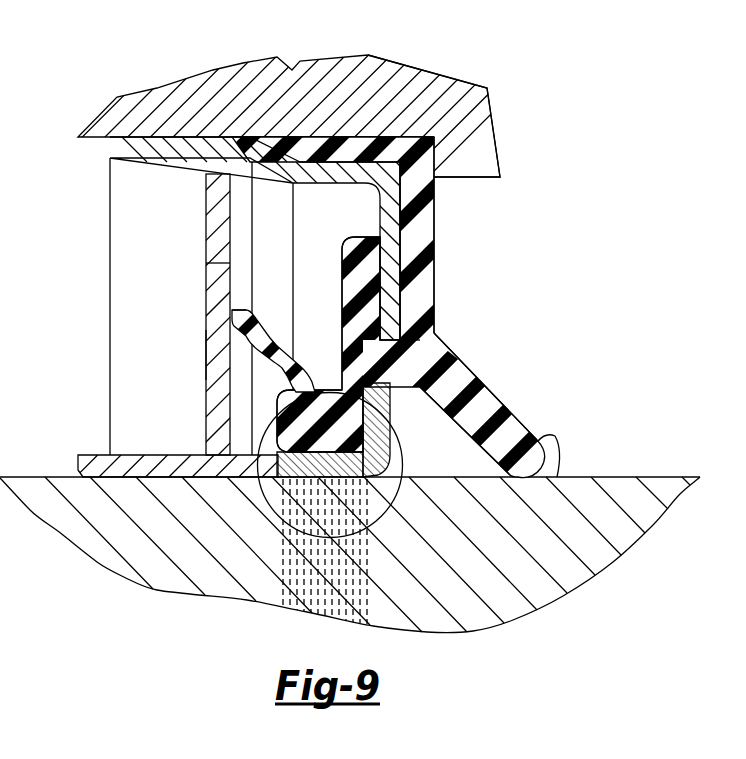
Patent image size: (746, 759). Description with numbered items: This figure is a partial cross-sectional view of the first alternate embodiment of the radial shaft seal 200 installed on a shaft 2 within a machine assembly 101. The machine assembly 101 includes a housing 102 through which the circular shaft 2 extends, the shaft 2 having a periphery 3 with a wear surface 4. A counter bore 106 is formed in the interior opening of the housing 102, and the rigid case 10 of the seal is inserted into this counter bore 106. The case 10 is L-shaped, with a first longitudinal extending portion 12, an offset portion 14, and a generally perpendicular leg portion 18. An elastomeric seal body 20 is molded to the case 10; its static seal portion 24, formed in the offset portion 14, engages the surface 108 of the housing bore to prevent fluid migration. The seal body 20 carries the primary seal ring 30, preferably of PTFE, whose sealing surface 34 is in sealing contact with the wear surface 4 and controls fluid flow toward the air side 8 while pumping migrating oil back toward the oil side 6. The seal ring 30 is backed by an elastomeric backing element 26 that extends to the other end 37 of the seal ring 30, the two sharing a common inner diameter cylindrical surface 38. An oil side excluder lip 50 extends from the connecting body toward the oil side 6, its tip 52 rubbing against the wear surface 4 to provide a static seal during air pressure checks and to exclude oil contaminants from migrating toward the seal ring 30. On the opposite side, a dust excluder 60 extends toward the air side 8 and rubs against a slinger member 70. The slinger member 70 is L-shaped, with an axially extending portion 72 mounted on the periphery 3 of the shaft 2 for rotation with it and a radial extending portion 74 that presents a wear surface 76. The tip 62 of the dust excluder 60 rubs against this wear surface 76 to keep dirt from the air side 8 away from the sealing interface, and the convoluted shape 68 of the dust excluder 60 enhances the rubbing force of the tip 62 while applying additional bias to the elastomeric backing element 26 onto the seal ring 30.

The shaft 2 is at (544, 565).
The periphery of the shaft 3 is at (641, 477).
The wear surface 4 is at (350, 508).
The oil side 6 is at (513, 321).
The air side 8 is at (155, 381).
The case 10 is at (327, 288).
The first longitudinal extending portion 12 is at (340, 170).
The offset portion 14 is at (153, 157).
The perpendicular leg portion 18 is at (394, 253).
The seal body 20 is at (330, 265).
The static seal portion 24 is at (382, 142).
The elastomeric backing element 26 is at (300, 404).
The seal ring 30 is at (300, 518).
The sealing surface 34 is at (277, 454).
The other end of the seal ring 37 is at (404, 396).
The common inner diameter cylindrical surface 38 is at (390, 435).
The excluder lip 50 is at (488, 400).
The tip 52 is at (548, 460).
The dust excluder 60 is at (268, 345).
The tip of the dust excluder 62 is at (232, 318).
The convoluted shape 68 is at (312, 390).
The slinger member 70 is at (205, 353).
The axially extending portion 72 is at (128, 460).
The radial extending portion 74 is at (217, 242).
The wear surface of the slinger 76 is at (230, 282).
The machine assembly 101 is at (435, 105).
The housing 102 is at (158, 102).
The counter bore 106 is at (430, 134).
The surface of the bore 108 is at (357, 145).
The radial shaft seal 200 is at (367, 307).